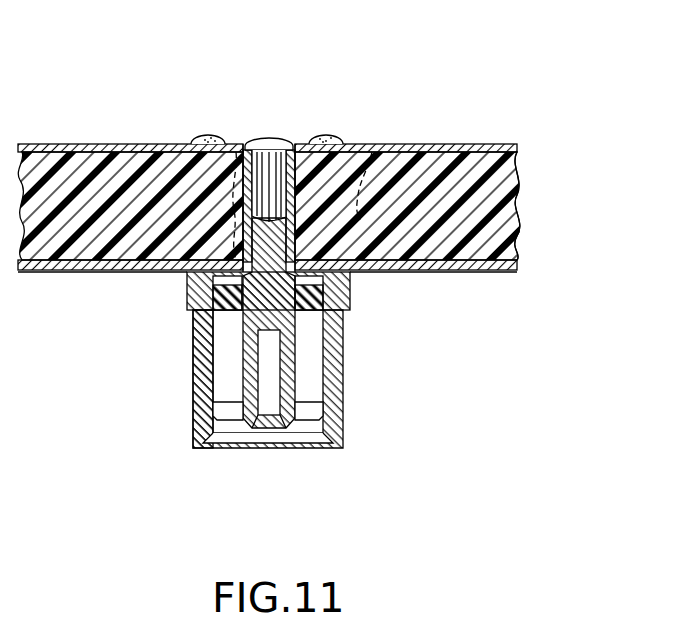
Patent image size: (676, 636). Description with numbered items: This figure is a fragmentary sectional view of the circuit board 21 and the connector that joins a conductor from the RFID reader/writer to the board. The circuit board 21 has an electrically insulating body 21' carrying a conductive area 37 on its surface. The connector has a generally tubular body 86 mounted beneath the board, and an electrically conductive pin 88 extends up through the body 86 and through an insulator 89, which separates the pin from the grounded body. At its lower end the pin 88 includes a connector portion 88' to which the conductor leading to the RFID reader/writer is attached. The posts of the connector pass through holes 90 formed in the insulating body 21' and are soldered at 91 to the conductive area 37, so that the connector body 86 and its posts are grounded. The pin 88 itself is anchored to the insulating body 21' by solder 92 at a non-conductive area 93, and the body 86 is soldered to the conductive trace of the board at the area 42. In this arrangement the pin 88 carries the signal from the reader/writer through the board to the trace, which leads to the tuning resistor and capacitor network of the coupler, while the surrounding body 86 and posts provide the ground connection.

The circuit board 21 is at (295, 141).
The electrically insulating body 21' is at (562, 206).
The conductive area 37 is at (98, 143).
The area 42 is at (215, 283).
The tubular body 86 is at (343, 372).
The electrically conductive pin 88 is at (315, 304).
The connector portion 88' is at (247, 462).
The insulator 89 is at (483, 272).
The holes 90 is at (375, 140).
The solder 91 is at (207, 136).
The solder 92 is at (272, 140).
The non-conductive area 93 is at (234, 150).